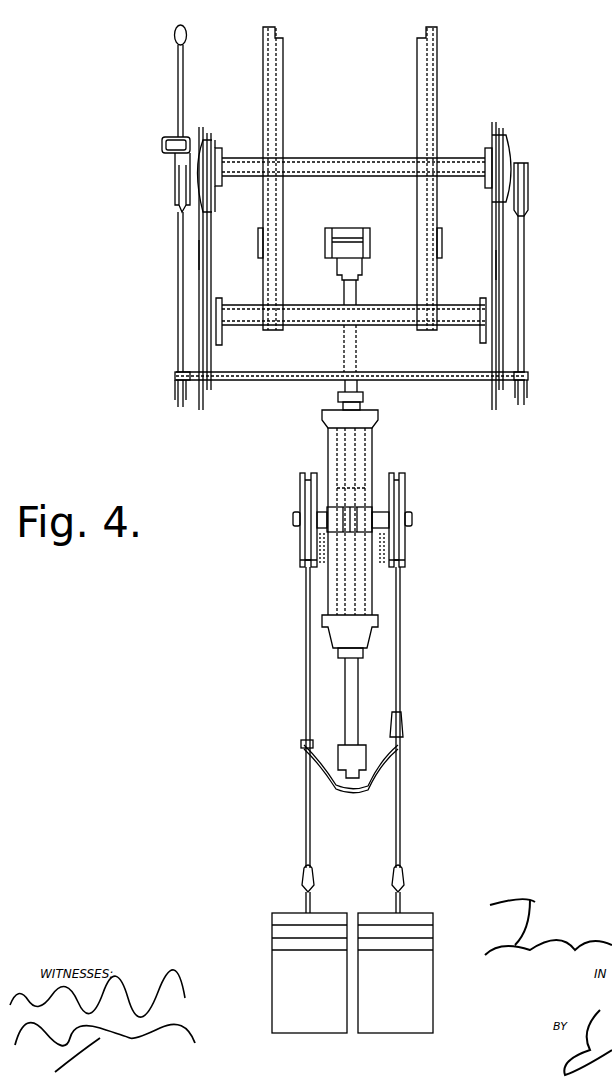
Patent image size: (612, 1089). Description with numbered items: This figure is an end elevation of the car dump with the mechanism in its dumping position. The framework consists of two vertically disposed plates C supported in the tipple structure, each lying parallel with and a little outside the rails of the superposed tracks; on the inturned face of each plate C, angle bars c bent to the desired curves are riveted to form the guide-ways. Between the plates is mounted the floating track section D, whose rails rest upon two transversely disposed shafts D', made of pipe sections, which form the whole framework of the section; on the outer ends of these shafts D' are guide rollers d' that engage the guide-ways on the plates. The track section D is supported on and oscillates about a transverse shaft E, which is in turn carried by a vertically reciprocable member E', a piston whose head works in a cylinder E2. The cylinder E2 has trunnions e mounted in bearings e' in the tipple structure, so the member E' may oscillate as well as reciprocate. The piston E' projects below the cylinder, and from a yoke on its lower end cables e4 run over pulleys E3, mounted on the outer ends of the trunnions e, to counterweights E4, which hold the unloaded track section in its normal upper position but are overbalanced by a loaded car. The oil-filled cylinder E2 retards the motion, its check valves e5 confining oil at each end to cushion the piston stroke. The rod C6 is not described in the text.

The vertically disposed plate C is at (200, 265).
The angle bar c is at (212, 255).
The rod C6 is at (178, 92).
The floating track section D is at (350, 178).
The transversely disposed shaft D' is at (353, 246).
The guide roller d' is at (355, 243).
The transversely disposed shaft E is at (340, 243).
The vertically reciprocable member E' is at (368, 336).
The cylinder E2 is at (372, 447).
The pulley E3 is at (302, 562).
The counterweight E4 is at (352, 973).
The trunnion e is at (354, 519).
The bearing e' is at (355, 507).
The cable e4 is at (305, 787).
The check valve e5 is at (328, 762).